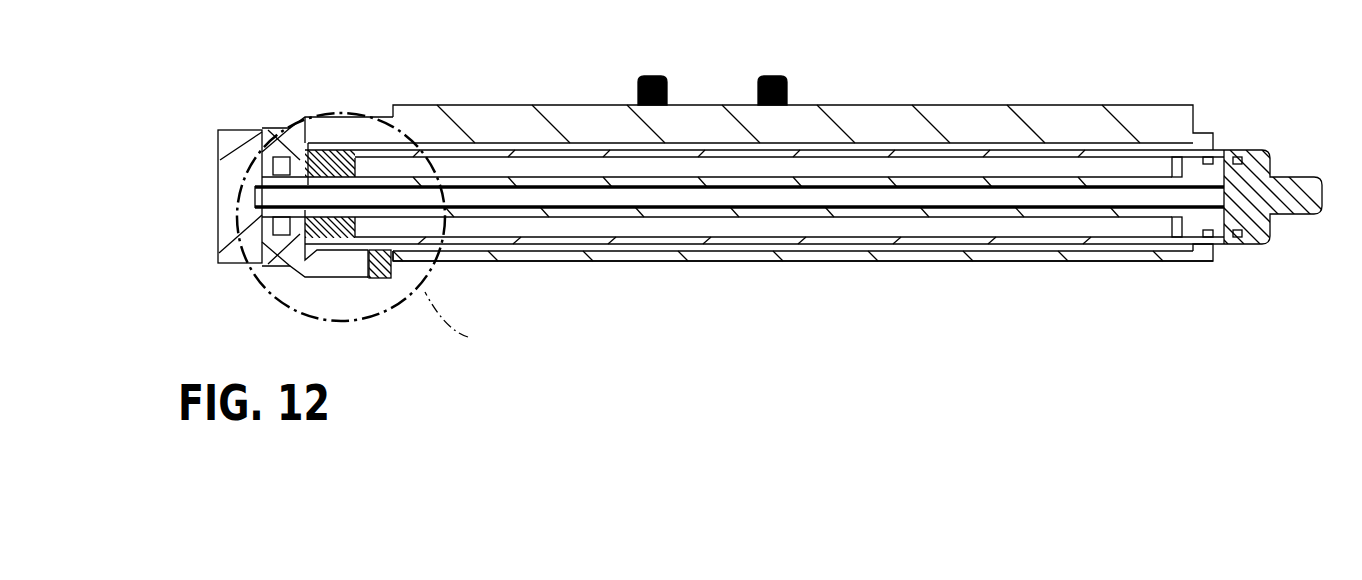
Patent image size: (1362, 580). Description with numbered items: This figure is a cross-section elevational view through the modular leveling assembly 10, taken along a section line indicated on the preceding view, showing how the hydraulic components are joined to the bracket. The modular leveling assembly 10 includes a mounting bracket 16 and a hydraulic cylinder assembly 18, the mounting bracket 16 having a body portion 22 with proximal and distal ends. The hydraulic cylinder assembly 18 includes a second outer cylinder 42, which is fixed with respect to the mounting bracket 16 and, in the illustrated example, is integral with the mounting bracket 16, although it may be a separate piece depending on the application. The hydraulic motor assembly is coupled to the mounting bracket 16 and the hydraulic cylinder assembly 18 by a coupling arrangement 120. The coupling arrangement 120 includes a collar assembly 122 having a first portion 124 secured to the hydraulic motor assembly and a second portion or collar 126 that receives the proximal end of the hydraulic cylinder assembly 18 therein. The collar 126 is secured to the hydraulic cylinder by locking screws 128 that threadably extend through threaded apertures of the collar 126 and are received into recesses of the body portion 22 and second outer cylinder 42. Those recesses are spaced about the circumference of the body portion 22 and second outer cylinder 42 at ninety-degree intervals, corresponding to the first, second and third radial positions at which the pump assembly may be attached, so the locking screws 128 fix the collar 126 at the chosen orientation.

The modular leveling assembly 10 is at (572, 68).
The mounting bracket 16 is at (842, 105).
The hydraulic cylinder assembly 18 is at (758, 267).
The body portion 22 is at (513, 147).
The second outer cylinder 42 is at (555, 261).
The coupling arrangement 120 is at (240, 268).
The collar assembly 122 is at (308, 110).
The first portion 124 is at (233, 128).
The collar 126 is at (382, 113).
The locking screws 128 is at (381, 280).